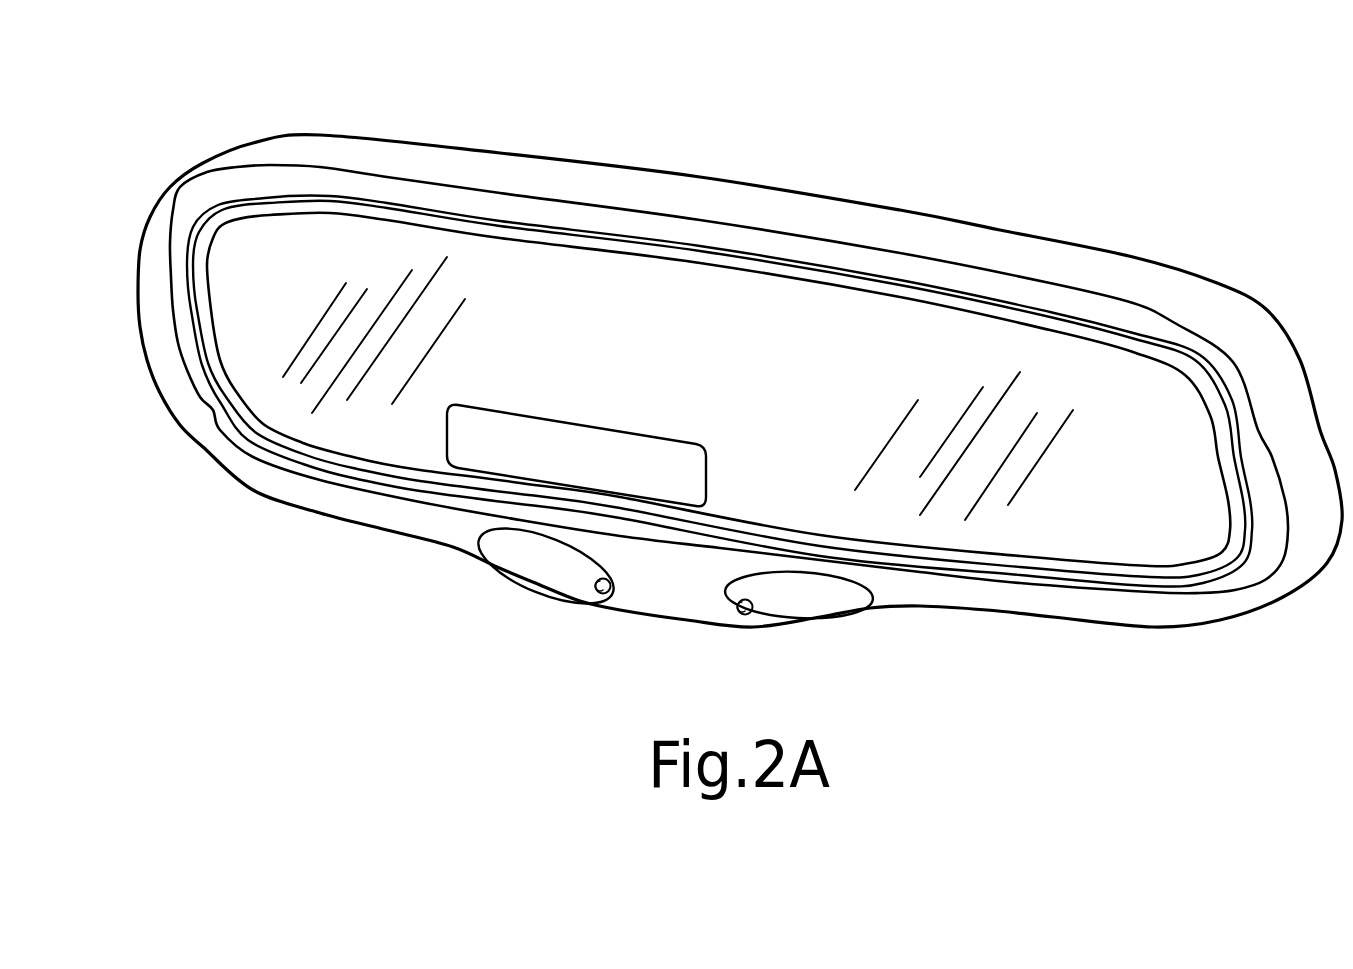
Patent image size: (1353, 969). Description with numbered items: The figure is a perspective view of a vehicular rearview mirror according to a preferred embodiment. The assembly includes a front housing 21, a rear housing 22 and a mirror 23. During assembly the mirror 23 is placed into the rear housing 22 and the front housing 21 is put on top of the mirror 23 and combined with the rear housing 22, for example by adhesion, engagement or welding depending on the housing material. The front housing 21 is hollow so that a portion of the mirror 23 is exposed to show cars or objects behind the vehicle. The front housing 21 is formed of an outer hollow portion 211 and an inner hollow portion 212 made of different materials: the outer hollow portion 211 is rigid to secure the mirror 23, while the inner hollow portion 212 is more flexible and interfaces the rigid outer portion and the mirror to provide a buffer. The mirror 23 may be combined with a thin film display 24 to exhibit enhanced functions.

The front housing 21 is at (1247, 565).
The outer hollow portion 211 is at (1183, 607).
The inner hollow portion 212 is at (1083, 582).
The rear housing 22 is at (1057, 260).
The mirror 23 is at (1137, 402).
The thin film display 24 is at (503, 457).